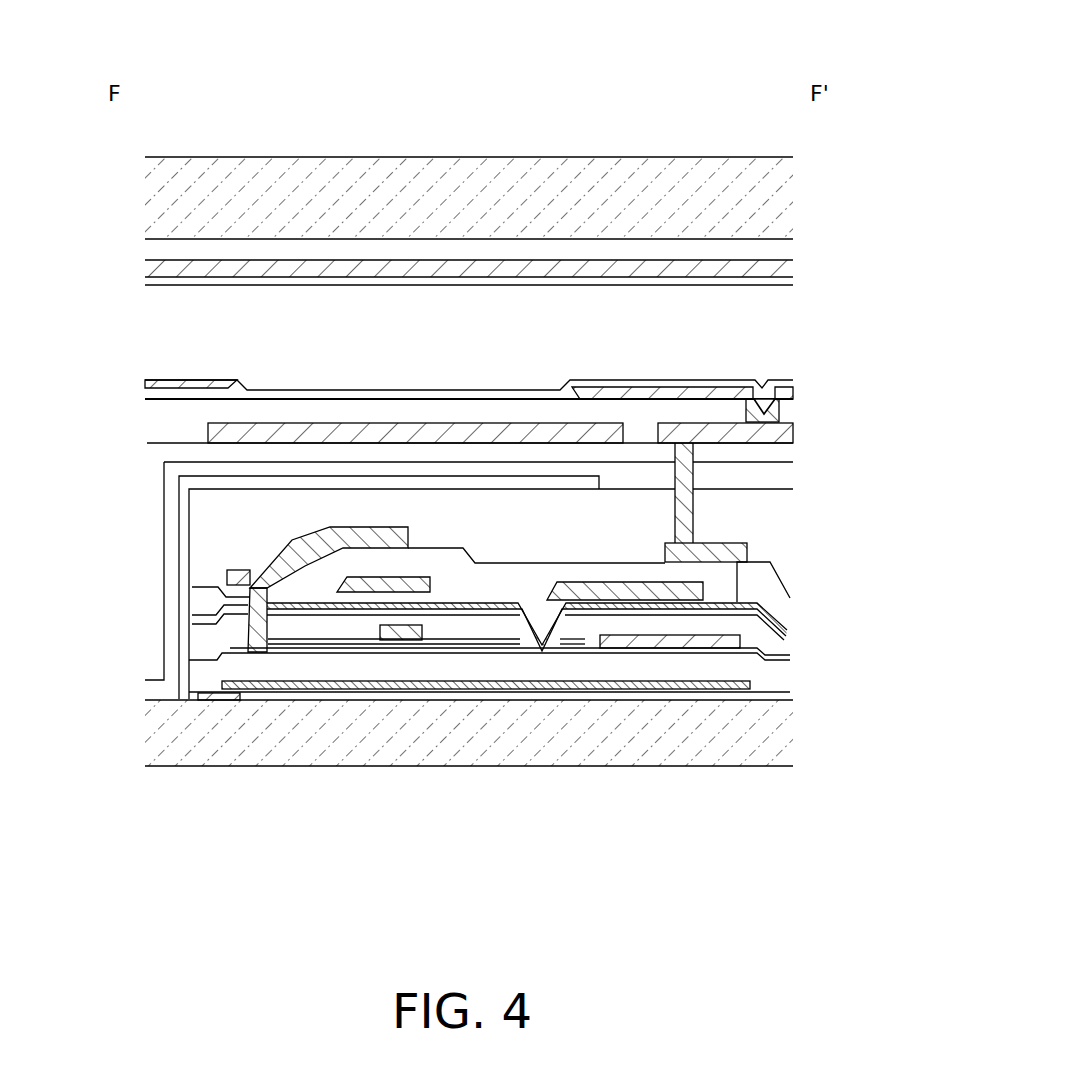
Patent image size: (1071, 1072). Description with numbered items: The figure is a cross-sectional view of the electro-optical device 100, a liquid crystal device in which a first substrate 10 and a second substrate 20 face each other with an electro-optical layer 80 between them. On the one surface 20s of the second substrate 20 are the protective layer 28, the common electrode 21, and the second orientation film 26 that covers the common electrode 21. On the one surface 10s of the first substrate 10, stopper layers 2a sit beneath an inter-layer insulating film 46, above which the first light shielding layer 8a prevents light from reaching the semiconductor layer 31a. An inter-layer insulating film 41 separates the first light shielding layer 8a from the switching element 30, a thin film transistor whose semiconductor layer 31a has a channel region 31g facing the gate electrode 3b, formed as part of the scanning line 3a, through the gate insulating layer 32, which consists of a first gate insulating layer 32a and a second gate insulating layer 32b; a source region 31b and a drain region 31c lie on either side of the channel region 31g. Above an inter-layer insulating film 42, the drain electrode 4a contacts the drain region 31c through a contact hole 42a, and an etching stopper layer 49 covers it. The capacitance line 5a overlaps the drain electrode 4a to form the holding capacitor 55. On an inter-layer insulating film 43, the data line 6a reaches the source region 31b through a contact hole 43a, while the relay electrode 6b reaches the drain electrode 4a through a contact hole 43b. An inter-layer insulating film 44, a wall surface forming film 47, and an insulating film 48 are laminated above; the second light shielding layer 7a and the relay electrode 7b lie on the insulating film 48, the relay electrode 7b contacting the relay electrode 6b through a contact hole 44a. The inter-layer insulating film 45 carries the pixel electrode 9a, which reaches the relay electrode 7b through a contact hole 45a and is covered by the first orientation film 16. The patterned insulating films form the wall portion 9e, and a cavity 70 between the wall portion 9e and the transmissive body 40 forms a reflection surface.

The electro-optical device 100 is at (828, 138).
The second substrate 20 is at (765, 200).
The one surface of the second substrate 20s is at (706, 238).
The common electrode 21 is at (205, 267).
The second orientation film 26 is at (255, 277).
The protective layer 28 is at (337, 255).
The first orientation film 16 is at (476, 395).
The pixel electrode 9a is at (790, 395).
The inter-layer insulating film 45 is at (787, 403).
The contact hole 45a is at (780, 412).
The electro-optical layer 80 is at (600, 340).
The wall portion 9e is at (345, 508).
The insulating film 48 is at (215, 455).
The transmissive body 40 is at (66, 427).
The second light shielding layer 7a is at (483, 446).
The relay electrode 7b is at (665, 433).
The wall surface forming film 47 is at (172, 496).
The inter-layer insulating film 44 is at (209, 509).
The cavity 70 is at (187, 584).
The contact hole 44a is at (660, 538).
The relay electrode 6b is at (748, 550).
The contact hole 43b is at (787, 596).
The data line 6a is at (290, 562).
The capacitance line 5a is at (247, 640).
The contact hole 43a is at (222, 585).
The inter-layer insulating film 43 is at (786, 608).
The etching stopper layer 49 is at (790, 632).
The drain electrode 4a is at (340, 595).
The first light shielding layer 8a is at (575, 605).
The gate electrode 3b is at (400, 640).
The source region 31b is at (335, 648).
The semiconductor layer 31a is at (388, 650).
The channel region 31g is at (395, 648).
The switching element 30 is at (385, 645).
The drain region 31c is at (497, 648).
The contact hole 42a is at (540, 648).
The first gate insulating layer 32a is at (590, 652).
The second gate insulating layer 32b is at (622, 652).
The gate insulating layer 32 is at (737, 868).
The holding capacitor 55 is at (308, 840).
The inter-layer insulating film 42 is at (782, 647).
The inter-layer insulating film 41 is at (782, 672).
The scanning line 3a is at (690, 655).
The inter-layer insulating film 46 is at (782, 697).
The stopper layer 2a is at (202, 702).
The first substrate 10 is at (142, 775).
The one surface of the first substrate 10s is at (755, 703).